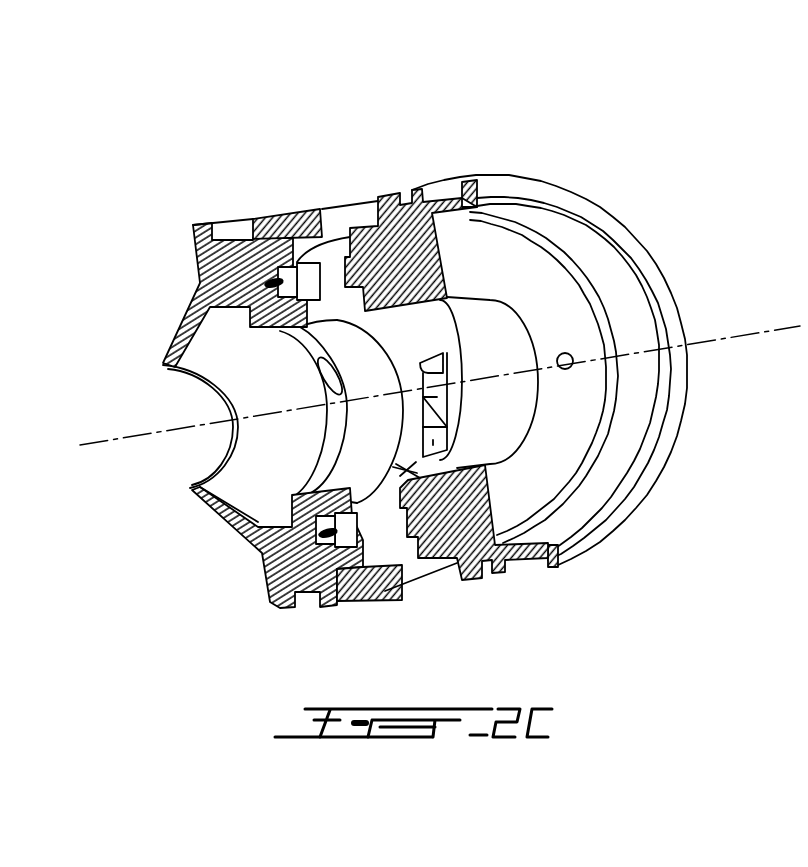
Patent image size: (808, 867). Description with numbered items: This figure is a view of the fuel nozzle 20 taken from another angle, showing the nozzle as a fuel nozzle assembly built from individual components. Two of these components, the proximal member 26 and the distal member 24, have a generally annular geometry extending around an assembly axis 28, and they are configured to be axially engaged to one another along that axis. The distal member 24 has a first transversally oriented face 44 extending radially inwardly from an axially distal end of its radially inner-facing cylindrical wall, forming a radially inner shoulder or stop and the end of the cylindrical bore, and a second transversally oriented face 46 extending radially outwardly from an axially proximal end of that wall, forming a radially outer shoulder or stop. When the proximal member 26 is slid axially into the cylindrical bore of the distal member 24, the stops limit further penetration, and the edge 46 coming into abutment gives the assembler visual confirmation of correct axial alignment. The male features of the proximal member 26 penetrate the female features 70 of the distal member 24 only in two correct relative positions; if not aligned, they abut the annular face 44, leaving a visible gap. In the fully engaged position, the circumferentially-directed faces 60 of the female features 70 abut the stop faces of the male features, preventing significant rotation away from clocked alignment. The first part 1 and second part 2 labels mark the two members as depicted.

The first coupling part (shaft) 1 is at (273, 408).
The second coupling part (housing) 2 is at (563, 467).
The fuel nozzle 20 is at (226, 216).
The distal member 24 is at (283, 208).
The proximal member 26 is at (572, 191).
The assembly axis 28 is at (111, 437).
The first transversally oriented face 44 is at (403, 463).
The second transversally oriented face 46 is at (417, 578).
The circumferentially-directed faces 60 is at (425, 373).
The female features 70 is at (433, 445).